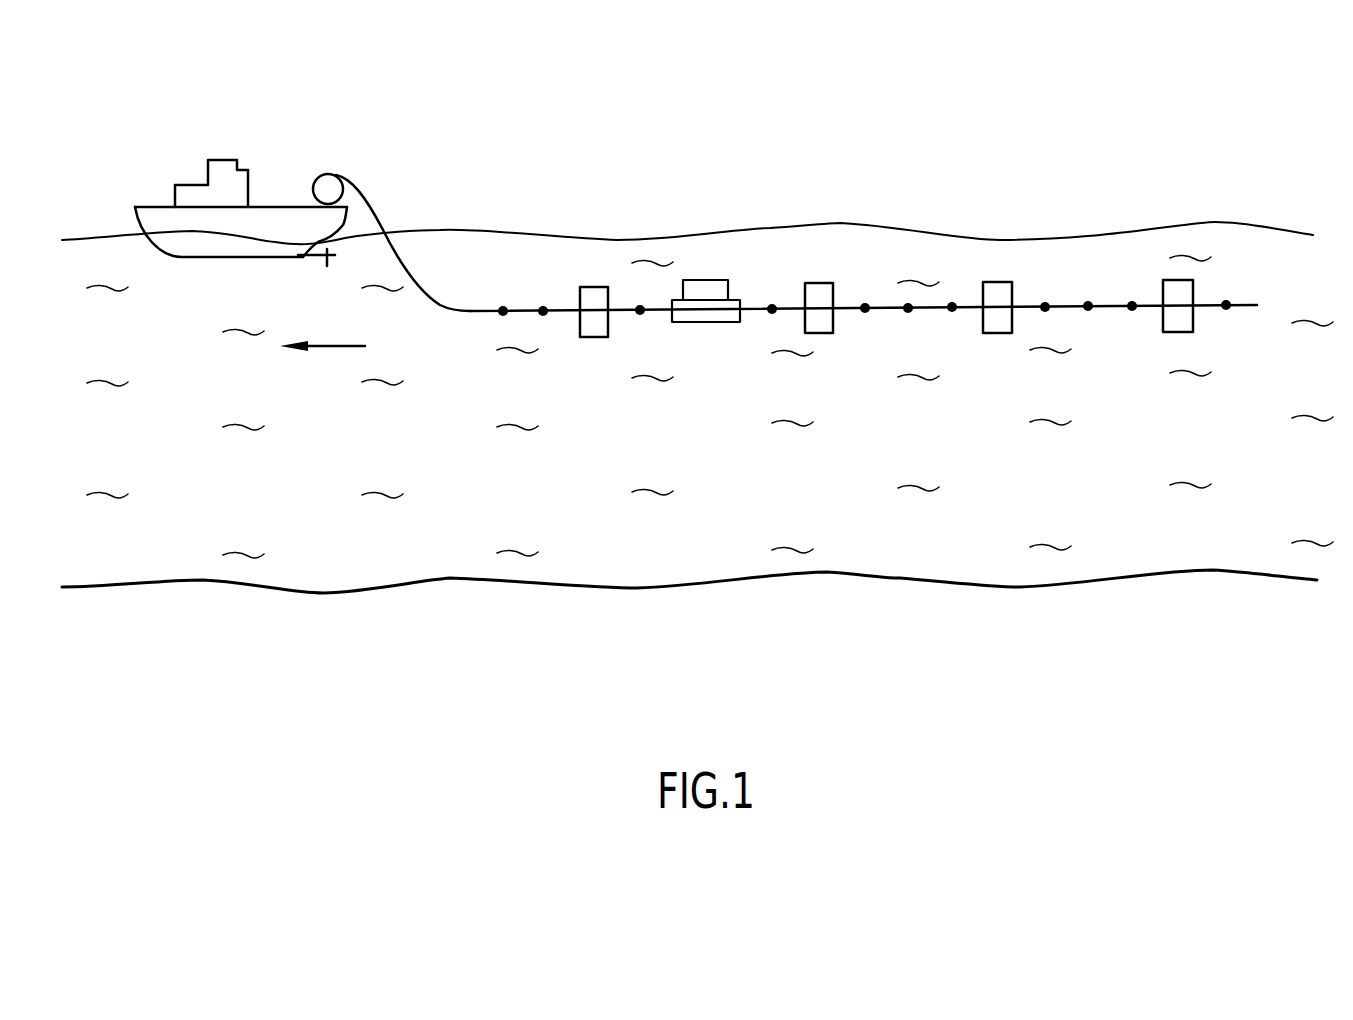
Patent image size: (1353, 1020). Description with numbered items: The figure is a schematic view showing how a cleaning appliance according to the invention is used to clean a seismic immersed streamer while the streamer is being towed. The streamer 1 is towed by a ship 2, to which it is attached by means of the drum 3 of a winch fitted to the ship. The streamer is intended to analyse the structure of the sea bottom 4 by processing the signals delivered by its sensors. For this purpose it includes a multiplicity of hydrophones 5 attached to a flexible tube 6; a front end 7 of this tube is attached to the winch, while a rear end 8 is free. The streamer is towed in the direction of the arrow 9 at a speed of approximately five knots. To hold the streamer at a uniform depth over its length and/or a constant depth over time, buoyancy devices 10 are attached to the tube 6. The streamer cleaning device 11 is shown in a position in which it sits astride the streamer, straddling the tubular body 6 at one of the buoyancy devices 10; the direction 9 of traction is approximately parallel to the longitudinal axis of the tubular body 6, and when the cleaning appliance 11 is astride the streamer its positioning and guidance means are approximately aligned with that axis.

The streamer 1 is at (908, 265).
The ship 2 is at (272, 205).
The drum 3 is at (330, 173).
The sea bottom 4 is at (594, 670).
The hydrophones 5 is at (772, 312).
The flexible tube 6 is at (653, 314).
The front end 7 is at (360, 193).
The rear end 8 is at (1260, 303).
The arrow 9 is at (340, 349).
The buoyancy devices 10 is at (593, 287).
The streamer cleaning device 11 is at (718, 315).